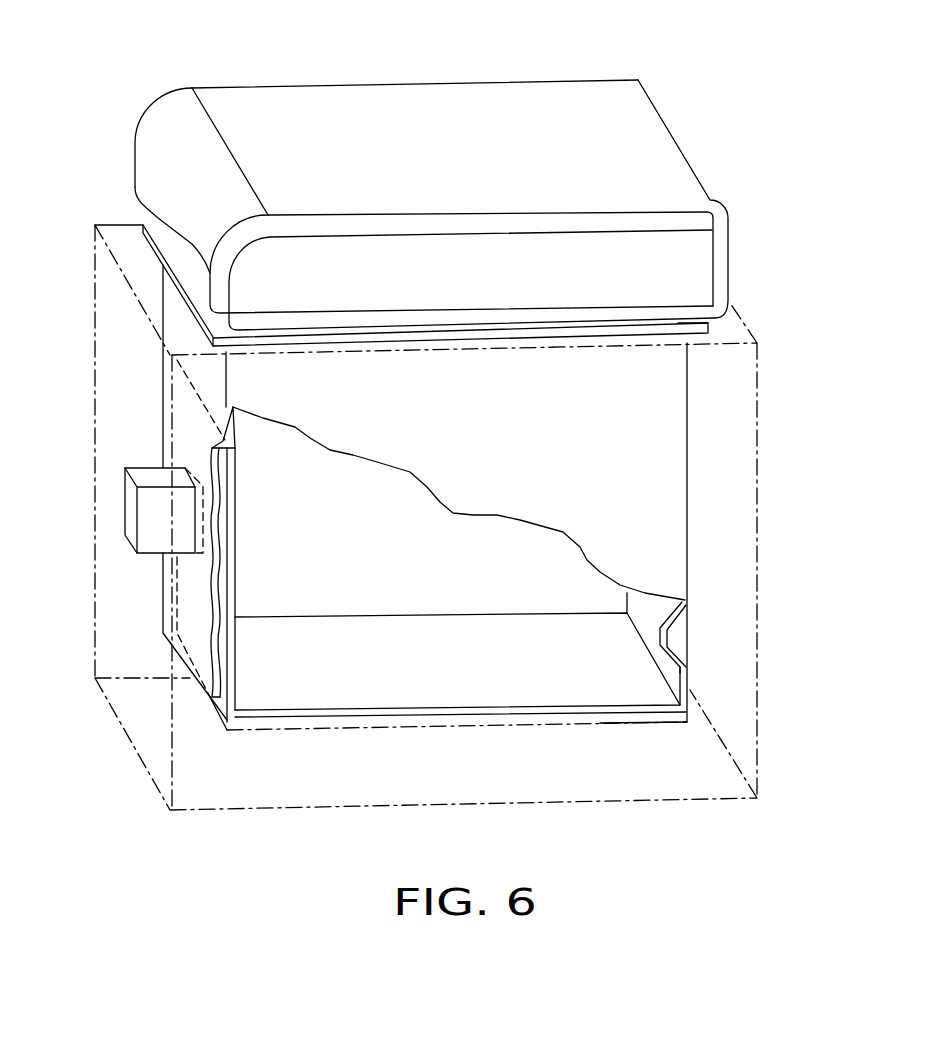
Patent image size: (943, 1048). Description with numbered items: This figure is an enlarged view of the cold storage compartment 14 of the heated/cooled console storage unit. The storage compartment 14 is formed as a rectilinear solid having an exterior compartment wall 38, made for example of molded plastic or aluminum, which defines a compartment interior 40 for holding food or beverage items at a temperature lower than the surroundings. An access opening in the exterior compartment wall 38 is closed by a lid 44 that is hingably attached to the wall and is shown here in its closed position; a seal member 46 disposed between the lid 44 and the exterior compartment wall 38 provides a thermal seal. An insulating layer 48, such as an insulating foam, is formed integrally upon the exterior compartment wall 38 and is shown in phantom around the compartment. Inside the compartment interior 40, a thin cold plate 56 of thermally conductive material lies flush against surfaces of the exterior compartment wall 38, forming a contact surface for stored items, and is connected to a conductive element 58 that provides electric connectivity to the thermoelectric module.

The storage compartment 14 is at (456, 433).
The lid 44 is at (630, 100).
The seal member 46 is at (678, 322).
The exterior compartment wall 38 is at (498, 558).
The compartment interior 40 is at (507, 592).
The cold plate 56 is at (647, 693).
The conductive element 58 is at (155, 472).
The insulating layer 48 is at (728, 719).